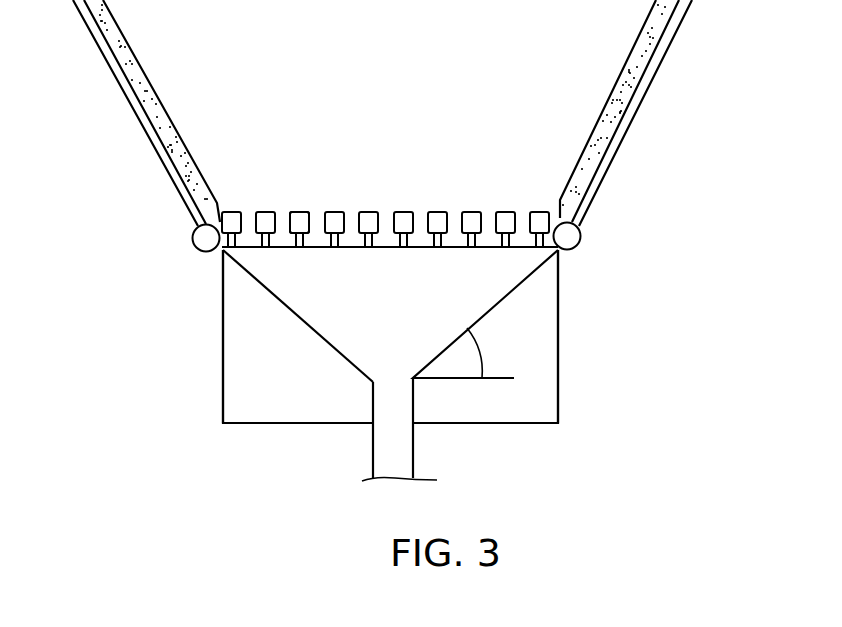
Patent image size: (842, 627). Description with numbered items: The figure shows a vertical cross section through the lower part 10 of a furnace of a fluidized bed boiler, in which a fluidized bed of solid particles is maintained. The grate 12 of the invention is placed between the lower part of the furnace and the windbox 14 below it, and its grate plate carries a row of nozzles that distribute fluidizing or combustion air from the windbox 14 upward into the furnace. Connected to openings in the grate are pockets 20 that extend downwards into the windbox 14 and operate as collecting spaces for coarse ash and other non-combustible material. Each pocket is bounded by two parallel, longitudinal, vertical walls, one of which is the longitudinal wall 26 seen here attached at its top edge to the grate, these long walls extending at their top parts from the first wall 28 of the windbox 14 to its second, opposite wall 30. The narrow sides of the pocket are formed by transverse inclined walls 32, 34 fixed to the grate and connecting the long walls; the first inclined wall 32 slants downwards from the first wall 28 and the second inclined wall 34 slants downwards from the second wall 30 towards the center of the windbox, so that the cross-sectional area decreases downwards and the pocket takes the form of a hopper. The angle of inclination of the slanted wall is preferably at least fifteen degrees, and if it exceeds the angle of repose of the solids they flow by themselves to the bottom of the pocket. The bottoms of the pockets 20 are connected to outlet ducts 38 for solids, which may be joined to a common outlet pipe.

The lower part of a furnace 10 is at (393, 63).
The grate 12 is at (470, 144).
The windbox 14 is at (250, 355).
The pockets 20 is at (425, 280).
The longitudinal vertical wall 26 is at (327, 275).
The first wall of the windbox 28 is at (224, 322).
The second wall of the windbox 30 is at (561, 330).
The transverse inclined wall 32 is at (316, 337).
The transverse inclined wall 34 is at (517, 290).
The outlet duct 38 is at (398, 447).